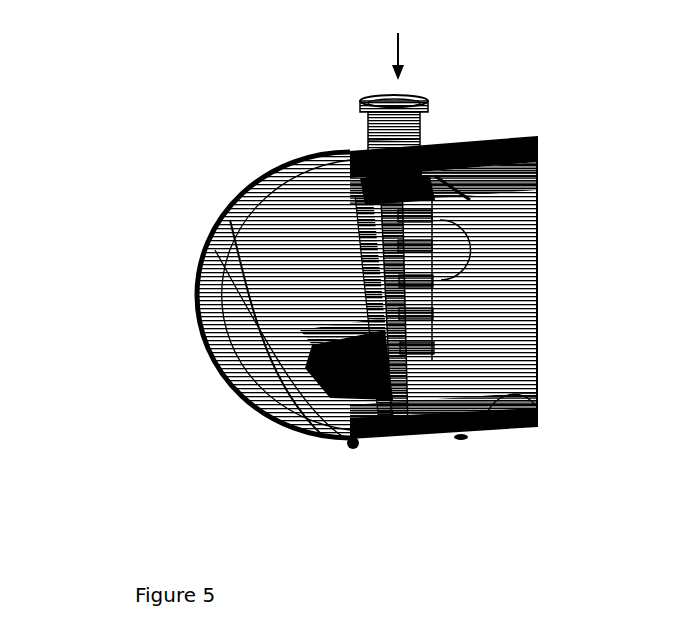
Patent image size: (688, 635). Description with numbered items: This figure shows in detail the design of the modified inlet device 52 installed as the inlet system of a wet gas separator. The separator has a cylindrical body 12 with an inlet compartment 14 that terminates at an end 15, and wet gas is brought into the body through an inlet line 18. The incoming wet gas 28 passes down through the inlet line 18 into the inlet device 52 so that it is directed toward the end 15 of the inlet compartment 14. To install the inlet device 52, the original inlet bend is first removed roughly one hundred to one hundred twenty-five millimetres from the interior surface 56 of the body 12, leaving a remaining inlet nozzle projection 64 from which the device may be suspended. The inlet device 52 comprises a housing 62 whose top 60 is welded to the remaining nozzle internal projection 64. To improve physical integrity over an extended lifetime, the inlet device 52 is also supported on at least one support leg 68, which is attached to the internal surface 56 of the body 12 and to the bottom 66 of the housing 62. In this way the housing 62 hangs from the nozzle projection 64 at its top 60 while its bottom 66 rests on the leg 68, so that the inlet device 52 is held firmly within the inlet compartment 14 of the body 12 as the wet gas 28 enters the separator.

The cylindrical body 12 is at (493, 140).
The inlet compartment 14 is at (473, 116).
The end of inlet compartment 15 is at (200, 322).
The inlet line 18 is at (366, 134).
The incoming wet gas 28 is at (393, 63).
The modified inlet device 52 is at (465, 440).
The internal surface of body 56 is at (535, 398).
The top of housing 60 is at (440, 180).
The housing 62 is at (331, 263).
The remaining inlet nozzle projection 64 is at (535, 158).
The bottom of housing 66 is at (313, 396).
The support leg 68 is at (398, 436).